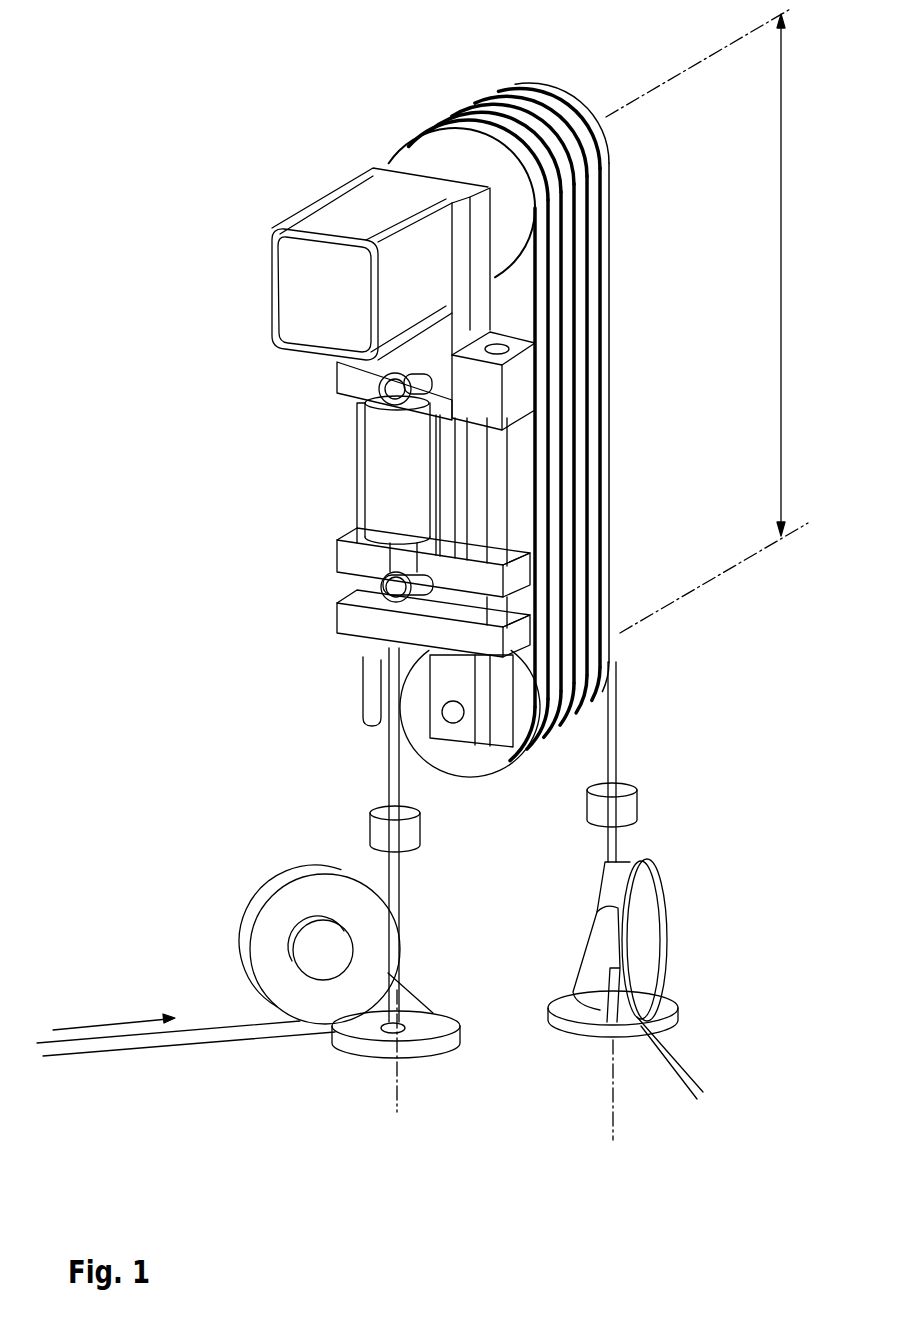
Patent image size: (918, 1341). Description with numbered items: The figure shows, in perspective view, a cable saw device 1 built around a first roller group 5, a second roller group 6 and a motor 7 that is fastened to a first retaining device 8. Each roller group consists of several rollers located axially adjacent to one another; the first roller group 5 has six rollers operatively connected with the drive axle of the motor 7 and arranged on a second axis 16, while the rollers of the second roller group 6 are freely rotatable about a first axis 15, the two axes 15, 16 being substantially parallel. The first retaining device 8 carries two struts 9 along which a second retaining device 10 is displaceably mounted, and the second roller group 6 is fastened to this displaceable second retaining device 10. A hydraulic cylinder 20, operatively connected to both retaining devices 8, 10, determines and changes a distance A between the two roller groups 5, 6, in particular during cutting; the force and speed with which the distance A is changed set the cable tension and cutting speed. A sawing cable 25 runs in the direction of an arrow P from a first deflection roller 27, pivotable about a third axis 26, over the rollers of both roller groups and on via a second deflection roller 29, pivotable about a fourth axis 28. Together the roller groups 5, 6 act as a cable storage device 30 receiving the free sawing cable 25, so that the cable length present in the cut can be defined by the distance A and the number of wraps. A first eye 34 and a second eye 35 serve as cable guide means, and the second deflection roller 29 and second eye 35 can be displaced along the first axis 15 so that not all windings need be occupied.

The cable saw device 1 is at (146, 74).
The first roller group 5 is at (598, 84).
The second roller group 6 is at (645, 598).
The motor 7 is at (352, 208).
The first retaining device 8 is at (523, 387).
The struts 9 is at (497, 518).
The second retaining device 10 is at (460, 678).
The first axis 15 is at (643, 623).
The second axis 16 is at (625, 103).
The hydraulic cylinder 20 is at (420, 475).
The sawing cable 25 is at (190, 1033).
The third axis 26 is at (400, 1113).
The first deflection roller 27 is at (272, 945).
The fourth axis 28 is at (615, 1125).
The second deflection roller 29 is at (645, 890).
The cable storage device 30 is at (620, 383).
The first eye 34 is at (365, 830).
The second eye 35 is at (628, 790).
The distance A is at (790, 275).
The arrow P is at (114, 1013).